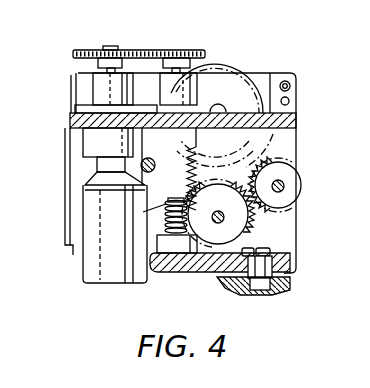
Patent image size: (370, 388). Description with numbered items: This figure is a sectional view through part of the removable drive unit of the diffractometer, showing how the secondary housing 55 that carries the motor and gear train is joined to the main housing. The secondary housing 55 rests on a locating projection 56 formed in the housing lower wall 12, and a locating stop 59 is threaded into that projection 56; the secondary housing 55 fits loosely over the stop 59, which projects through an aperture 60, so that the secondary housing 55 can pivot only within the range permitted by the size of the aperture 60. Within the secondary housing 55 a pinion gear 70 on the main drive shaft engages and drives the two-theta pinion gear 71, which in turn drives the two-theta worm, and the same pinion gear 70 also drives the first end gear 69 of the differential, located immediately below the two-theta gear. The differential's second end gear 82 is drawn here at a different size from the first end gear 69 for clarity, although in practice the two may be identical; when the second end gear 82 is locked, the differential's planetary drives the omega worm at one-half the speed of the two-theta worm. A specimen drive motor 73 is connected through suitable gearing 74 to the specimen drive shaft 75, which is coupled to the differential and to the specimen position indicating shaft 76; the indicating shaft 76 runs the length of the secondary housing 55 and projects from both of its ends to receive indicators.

The housing lower wall 12 is at (286, 288).
The secondary housing 55 is at (282, 262).
The locating projection 56 is at (285, 276).
The locating stop 59 is at (260, 253).
The aperture 60 is at (223, 268).
The first end gear 69 is at (256, 166).
The pinion gear 70 is at (203, 151).
The two-theta pinion gear 71 is at (233, 83).
The specimen drive motor 73 is at (92, 258).
The gearing 74 is at (165, 228).
The specimen drive shaft 75 is at (230, 209).
The specimen position indicating shaft 76 is at (283, 181).
The second differential end gear 82 is at (182, 273).